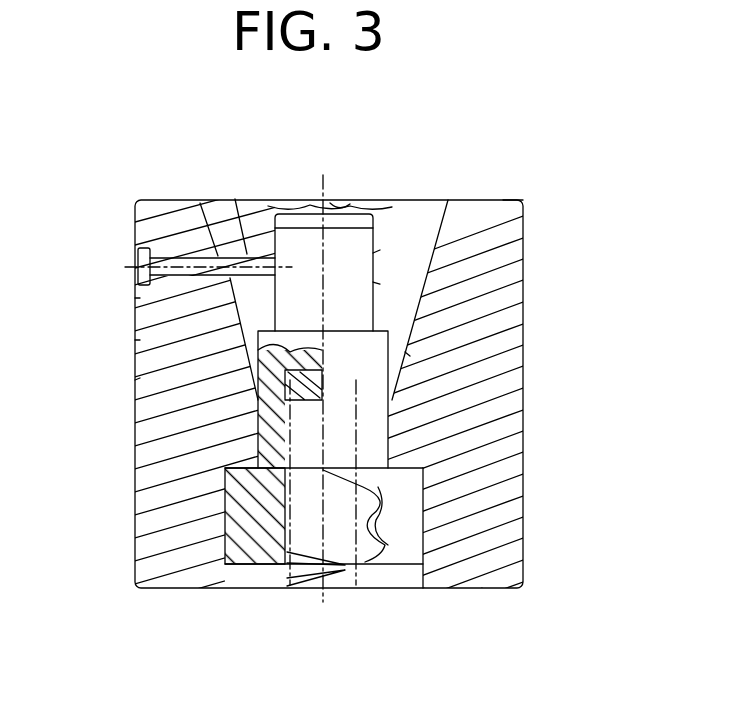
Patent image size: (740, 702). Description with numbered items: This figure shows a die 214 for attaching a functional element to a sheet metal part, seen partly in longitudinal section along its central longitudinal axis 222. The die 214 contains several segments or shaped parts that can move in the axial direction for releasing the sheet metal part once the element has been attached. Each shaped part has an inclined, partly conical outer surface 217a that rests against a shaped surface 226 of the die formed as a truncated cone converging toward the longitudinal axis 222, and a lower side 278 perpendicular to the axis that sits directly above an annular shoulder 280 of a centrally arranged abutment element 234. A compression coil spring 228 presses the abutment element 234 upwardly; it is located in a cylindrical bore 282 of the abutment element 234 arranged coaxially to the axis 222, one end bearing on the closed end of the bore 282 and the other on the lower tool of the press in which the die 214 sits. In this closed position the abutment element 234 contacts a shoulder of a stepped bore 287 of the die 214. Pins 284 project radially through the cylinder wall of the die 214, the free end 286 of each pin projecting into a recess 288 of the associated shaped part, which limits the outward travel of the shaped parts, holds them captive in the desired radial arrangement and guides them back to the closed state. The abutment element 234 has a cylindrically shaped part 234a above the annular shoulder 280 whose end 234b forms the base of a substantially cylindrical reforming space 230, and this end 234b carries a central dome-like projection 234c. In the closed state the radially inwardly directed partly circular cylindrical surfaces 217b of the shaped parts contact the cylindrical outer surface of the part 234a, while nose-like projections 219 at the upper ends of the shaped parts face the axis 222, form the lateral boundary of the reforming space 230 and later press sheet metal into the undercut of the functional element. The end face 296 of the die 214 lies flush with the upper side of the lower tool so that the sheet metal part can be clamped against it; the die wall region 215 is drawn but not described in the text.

The die 214 is at (534, 451).
The lower cavity wall 215 is at (523, 533).
The inclined partly conical outer surface 217a is at (210, 230).
The partly circular cylindrical surface 217b is at (373, 282).
The nose-like projection 219 is at (262, 203).
The central longitudinal axis 222 is at (323, 601).
The shaped surface 226 is at (232, 280).
The compression coil spring 228 is at (287, 593).
The reforming space 230 is at (352, 206).
The abutment element 234 is at (405, 353).
The cylindrically shaped part 234a is at (373, 253).
The end 234b is at (302, 207).
The dome-like projection 234c is at (335, 213).
The lower side 278 is at (137, 380).
The annular shoulder 280 is at (355, 325).
The cylindrical bore 282 is at (285, 531).
The pin 284 is at (138, 256).
The free end of pin 286 is at (235, 199).
The stepped bore 287 is at (246, 575).
The recess 288 is at (136, 340).
The end face 296 is at (497, 200).